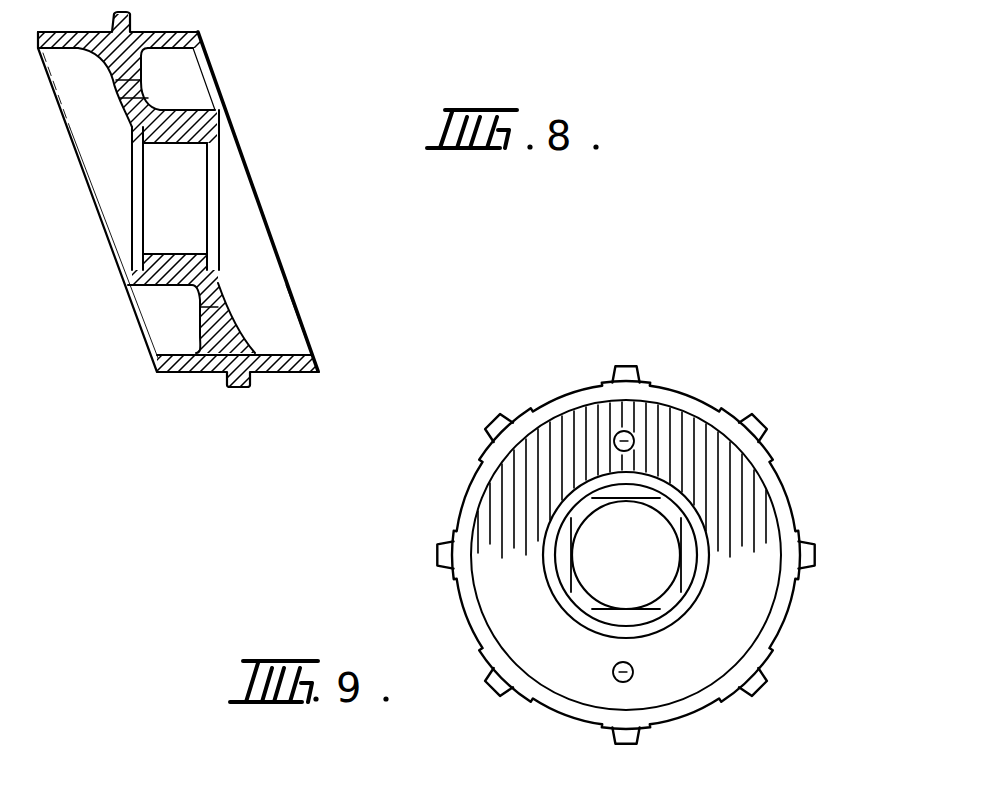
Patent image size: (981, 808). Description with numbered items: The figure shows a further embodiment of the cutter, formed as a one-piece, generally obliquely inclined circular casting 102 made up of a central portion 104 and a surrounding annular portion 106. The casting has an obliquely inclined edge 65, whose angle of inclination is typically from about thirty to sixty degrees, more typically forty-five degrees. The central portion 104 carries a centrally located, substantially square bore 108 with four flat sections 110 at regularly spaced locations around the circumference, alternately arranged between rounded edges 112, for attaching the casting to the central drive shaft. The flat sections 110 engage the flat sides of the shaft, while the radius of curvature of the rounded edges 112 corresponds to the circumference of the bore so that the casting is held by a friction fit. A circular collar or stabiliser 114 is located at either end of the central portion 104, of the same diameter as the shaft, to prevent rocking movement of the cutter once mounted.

In FIG. 8, the edge 65 is at (300, 318).
In FIG. 8, the obliquely inclined circular casting 102 is at (262, 135).
In FIG. 9, the obliquely inclined circular casting 102 is at (708, 390).
In FIG. 8, the central portion 104 is at (232, 226).
In FIG. 9, the central portion 104 is at (583, 645).
In FIG. 8, the annular portion 106 is at (222, 55).
In FIG. 9, the annular portion 106 is at (703, 660).
In FIG. 8, the substantially square bore 108 is at (190, 212).
In FIG. 9, the substantially square bore 108 is at (668, 522).
In FIG. 8, the flat sections 110 is at (190, 145).
In FIG. 9, the flat sections 110 is at (610, 494).
In FIG. 9, the rounded edges 112 is at (578, 597).
In FIG. 8, the circular collar or stabiliser 114 is at (215, 258).
In FIG. 9, the circular collar or stabiliser 114 is at (707, 587).